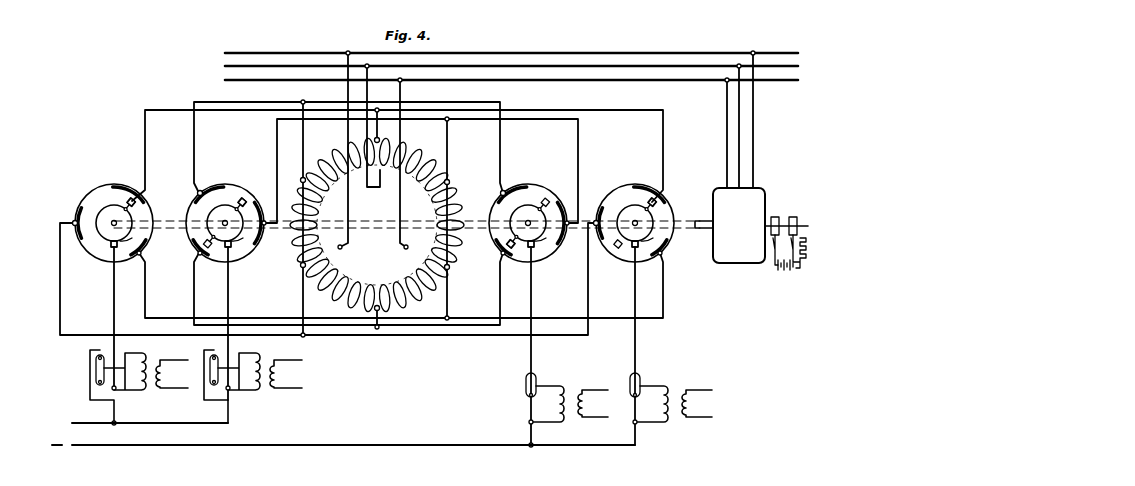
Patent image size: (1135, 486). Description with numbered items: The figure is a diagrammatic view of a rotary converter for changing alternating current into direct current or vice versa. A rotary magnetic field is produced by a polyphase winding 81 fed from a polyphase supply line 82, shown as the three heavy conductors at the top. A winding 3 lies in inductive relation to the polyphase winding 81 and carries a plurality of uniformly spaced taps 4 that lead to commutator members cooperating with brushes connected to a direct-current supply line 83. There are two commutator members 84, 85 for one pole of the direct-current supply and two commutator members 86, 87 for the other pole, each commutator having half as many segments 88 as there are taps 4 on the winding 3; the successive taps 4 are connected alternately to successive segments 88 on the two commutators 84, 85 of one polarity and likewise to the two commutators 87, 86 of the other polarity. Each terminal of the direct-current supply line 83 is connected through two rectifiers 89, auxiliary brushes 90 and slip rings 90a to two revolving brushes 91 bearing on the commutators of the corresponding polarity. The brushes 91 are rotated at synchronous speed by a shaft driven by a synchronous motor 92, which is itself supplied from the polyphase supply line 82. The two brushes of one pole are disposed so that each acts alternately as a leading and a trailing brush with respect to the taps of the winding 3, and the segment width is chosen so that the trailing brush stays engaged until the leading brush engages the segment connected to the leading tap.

The winding 3 is at (420, 151).
The taps 4 is at (303, 179).
The polyphase winding 81 is at (342, 220).
The polyphase supply line 82 is at (224, 54).
The direct-current supply line 83 is at (92, 426).
The commutator member 84 is at (99, 187).
The commutator member 85 is at (241, 188).
The commutator member 86 is at (537, 196).
The commutator member 87 is at (624, 196).
The segments 88 is at (74, 220).
The rectifiers 89 is at (96, 378).
The auxiliary brushes 90 is at (112, 249).
The slip rings 90a is at (127, 233).
The revolving brushes 91 is at (136, 201).
The synchronous motor 92 is at (762, 190).